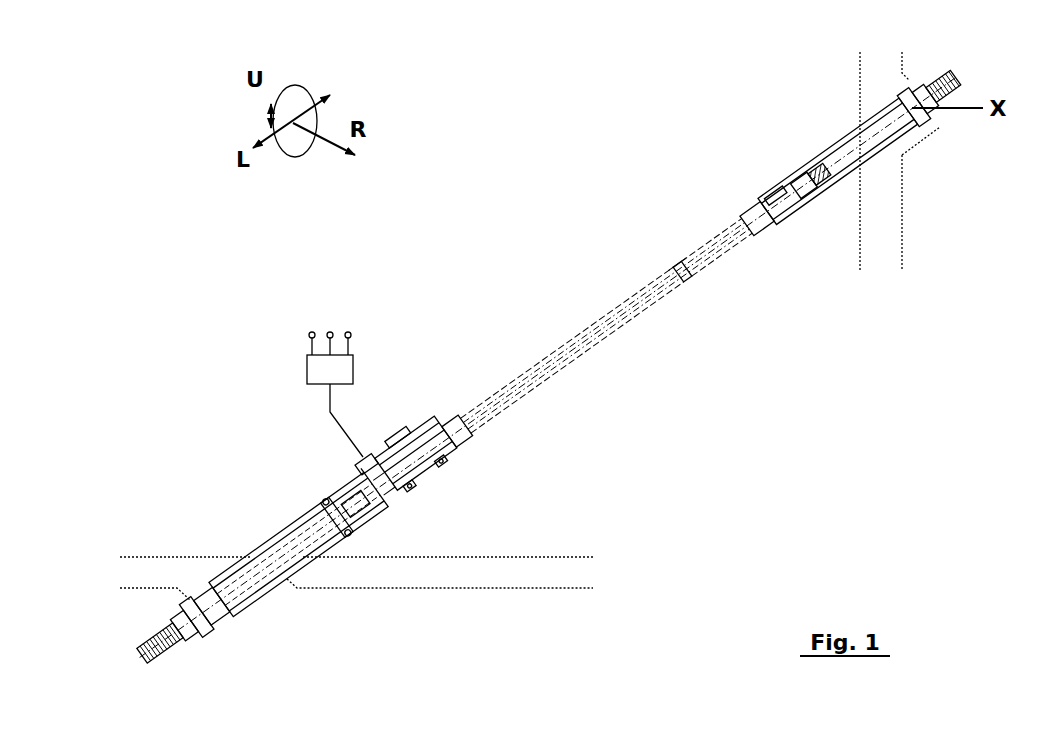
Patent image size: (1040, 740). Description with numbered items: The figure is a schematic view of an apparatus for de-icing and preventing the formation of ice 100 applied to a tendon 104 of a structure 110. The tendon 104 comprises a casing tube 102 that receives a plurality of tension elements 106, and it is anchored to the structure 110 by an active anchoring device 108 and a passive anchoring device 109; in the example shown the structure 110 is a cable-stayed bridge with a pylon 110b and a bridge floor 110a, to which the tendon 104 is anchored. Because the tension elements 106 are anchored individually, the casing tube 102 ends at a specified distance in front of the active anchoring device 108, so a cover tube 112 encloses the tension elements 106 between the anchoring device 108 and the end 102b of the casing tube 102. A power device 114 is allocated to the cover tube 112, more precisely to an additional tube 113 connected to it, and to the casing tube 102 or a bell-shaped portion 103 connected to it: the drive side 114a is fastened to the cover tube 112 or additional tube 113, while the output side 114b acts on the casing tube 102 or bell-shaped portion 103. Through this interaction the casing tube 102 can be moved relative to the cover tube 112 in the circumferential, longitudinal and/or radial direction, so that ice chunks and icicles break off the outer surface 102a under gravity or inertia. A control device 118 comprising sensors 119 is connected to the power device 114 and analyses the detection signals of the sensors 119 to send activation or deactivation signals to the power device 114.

The apparatus for de-icing and preventing the formation of ice 100 is at (438, 255).
The casing tube 102 is at (682, 280).
The surface of the casing tube 102a is at (675, 262).
The end of the casing tube 102b is at (382, 478).
The bell-shaped portion 103 is at (448, 453).
The tendon 104 is at (565, 363).
The tension elements 106 is at (148, 636).
The active anchoring device 108 is at (203, 497).
The passive anchoring device 109 is at (797, 95).
The structure 110 is at (885, 238).
The bridge floor 110a is at (500, 570).
The pylon 110b is at (888, 192).
The cover tube 112 is at (270, 583).
The additional tube 113 is at (408, 483).
The power device 114 is at (358, 465).
The drive side of the power device 114a is at (355, 470).
The output side of the power device 114b is at (398, 440).
The control device 118 is at (318, 368).
The sensors 119 is at (348, 332).